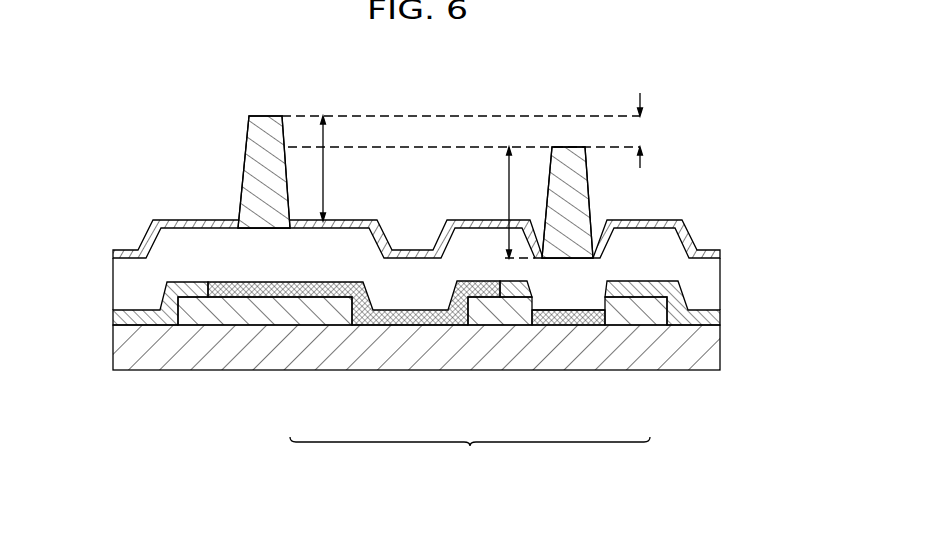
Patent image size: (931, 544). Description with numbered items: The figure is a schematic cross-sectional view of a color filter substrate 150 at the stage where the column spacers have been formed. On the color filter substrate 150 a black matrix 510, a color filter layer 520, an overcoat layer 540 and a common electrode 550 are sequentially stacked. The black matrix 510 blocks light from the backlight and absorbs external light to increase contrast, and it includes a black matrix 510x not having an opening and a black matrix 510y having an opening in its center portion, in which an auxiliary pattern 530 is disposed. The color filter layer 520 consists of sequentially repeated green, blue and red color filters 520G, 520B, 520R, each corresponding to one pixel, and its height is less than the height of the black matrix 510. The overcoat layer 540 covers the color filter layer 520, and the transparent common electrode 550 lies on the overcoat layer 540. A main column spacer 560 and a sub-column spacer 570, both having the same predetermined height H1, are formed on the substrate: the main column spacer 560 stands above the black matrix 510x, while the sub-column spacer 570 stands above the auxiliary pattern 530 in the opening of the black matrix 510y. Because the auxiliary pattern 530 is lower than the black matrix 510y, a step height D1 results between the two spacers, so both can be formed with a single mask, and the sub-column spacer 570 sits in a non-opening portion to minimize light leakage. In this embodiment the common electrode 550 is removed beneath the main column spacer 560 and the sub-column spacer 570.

The color filter substrate 150 is at (117, 347).
The black matrix 510 is at (470, 454).
The black matrix not having an opening 510x is at (305, 318).
The black matrix having an opening 510y is at (498, 318).
The color filter layer 520 is at (385, 282).
The green color filter 520G is at (190, 283).
The blue color filter 520B is at (290, 282).
The red color filter 520R is at (645, 281).
The auxiliary pattern 530 is at (588, 318).
The overcoat layer 540 is at (117, 286).
The common electrode 550 is at (113, 253).
The main column spacer 560 is at (245, 161).
The sub-column spacer 570 is at (593, 193).
The height H1 is at (461, 187).
The step height D1 is at (653, 130).